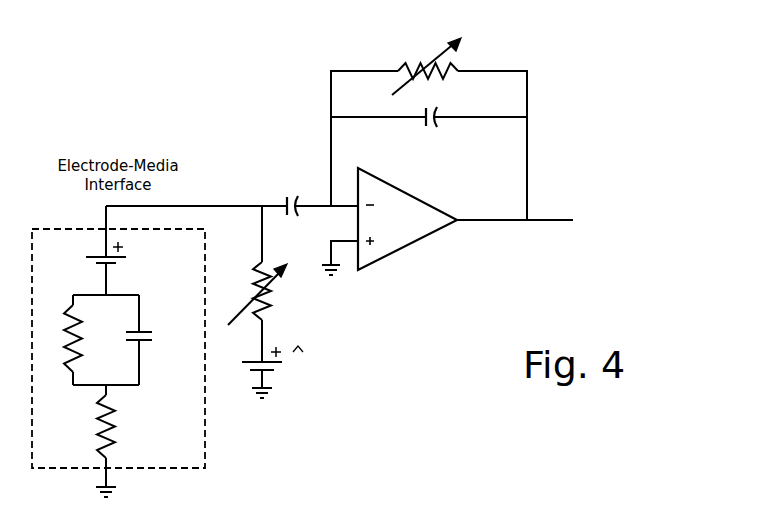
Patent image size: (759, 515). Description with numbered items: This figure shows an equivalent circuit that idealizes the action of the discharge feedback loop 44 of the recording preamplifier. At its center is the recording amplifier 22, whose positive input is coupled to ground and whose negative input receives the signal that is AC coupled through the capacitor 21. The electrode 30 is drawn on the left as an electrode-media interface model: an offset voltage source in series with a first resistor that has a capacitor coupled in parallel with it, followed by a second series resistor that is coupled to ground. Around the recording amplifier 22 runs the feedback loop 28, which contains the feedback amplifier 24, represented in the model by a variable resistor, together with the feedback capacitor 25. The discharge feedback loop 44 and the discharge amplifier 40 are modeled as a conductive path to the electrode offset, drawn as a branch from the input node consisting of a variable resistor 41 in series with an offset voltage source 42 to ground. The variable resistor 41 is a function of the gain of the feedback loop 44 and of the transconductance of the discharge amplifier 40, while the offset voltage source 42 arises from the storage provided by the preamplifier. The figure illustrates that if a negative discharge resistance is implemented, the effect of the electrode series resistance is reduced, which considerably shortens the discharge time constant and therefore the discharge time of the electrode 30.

The capacitor 21 is at (284, 198).
The recording amplifier 22 is at (406, 192).
The feedback amplifier 24 is at (400, 68).
The feedback capacitor 25 is at (433, 110).
The feedback loop 28 is at (461, 123).
The electrode 30 is at (205, 440).
The discharge amplifier 40 is at (286, 336).
The variable resistor 41 is at (257, 268).
The offset voltage source 42 is at (321, 406).
The discharge feedback loop 44 is at (355, 328).